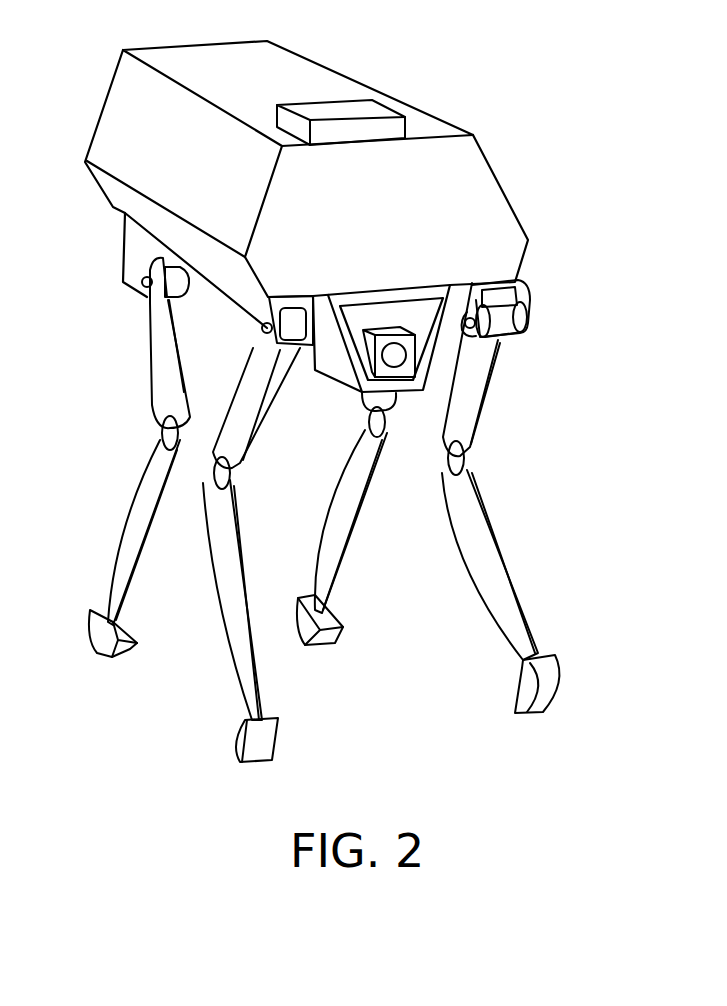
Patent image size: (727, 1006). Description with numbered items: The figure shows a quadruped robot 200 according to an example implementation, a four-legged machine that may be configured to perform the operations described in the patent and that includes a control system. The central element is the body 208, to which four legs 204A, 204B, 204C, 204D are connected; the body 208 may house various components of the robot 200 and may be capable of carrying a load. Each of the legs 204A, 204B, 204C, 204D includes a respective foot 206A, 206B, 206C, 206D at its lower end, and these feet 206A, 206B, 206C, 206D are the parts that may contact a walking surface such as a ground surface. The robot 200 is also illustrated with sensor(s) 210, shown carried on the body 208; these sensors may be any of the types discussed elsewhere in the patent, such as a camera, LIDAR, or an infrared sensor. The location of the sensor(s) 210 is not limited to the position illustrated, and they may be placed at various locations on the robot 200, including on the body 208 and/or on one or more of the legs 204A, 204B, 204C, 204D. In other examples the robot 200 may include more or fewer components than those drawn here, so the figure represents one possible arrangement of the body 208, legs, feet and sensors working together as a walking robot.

The quadruped robot 200 is at (443, 42).
The body 208 is at (527, 253).
The sensor(s) 210 is at (373, 327).
The leg 204A is at (118, 424).
The leg 204B is at (337, 685).
The leg 204C is at (379, 600).
The leg 204D is at (542, 556).
The foot 206A is at (120, 653).
The foot 206B is at (278, 747).
The foot 206C is at (342, 618).
The foot 206D is at (562, 690).